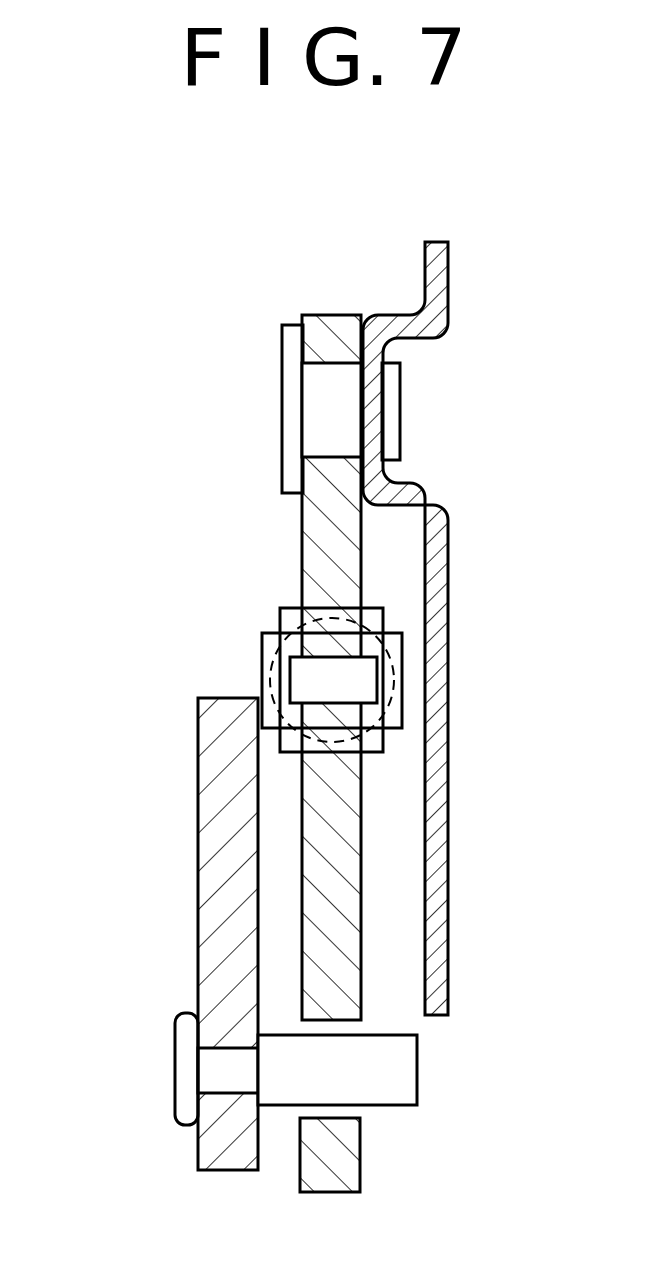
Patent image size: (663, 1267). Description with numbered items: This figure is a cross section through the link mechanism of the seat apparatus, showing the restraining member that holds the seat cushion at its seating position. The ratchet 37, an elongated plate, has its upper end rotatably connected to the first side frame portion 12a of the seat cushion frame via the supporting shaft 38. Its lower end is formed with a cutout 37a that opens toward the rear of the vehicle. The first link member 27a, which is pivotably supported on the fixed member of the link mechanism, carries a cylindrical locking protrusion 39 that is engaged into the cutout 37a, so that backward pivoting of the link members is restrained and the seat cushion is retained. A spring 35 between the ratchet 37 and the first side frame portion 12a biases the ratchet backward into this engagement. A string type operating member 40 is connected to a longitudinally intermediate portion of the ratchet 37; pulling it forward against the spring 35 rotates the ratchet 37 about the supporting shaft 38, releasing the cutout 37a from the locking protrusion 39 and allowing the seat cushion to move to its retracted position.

The first side frame portion 12a is at (448, 855).
The first link member 27a is at (202, 853).
The spring 35 is at (402, 655).
The ratchet 37 is at (312, 524).
The cutout 37a is at (342, 1100).
The supporting shaft 38 is at (388, 413).
The locking protrusion 39 is at (417, 1072).
The operating member 40 is at (260, 643).